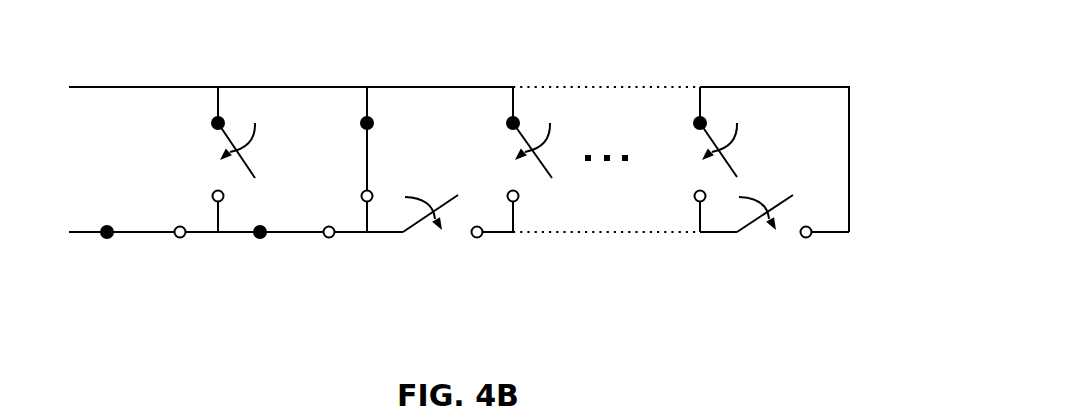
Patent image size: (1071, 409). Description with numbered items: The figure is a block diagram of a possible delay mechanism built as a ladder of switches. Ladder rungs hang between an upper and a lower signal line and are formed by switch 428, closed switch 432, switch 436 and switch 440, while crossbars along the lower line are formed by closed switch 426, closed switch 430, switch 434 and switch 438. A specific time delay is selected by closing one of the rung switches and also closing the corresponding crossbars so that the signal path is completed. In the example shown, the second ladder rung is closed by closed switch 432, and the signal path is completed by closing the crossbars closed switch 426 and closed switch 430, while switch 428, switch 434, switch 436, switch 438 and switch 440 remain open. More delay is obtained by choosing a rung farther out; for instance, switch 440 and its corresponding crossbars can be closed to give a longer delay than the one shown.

The closed switch 426 is at (143, 262).
The switch 428 is at (189, 137).
The closed switch 430 is at (292, 262).
The closed switch 432 is at (338, 137).
The switch 434 is at (442, 262).
The switch 436 is at (488, 137).
The switch 438 is at (774, 262).
The switch 440 is at (671, 137).